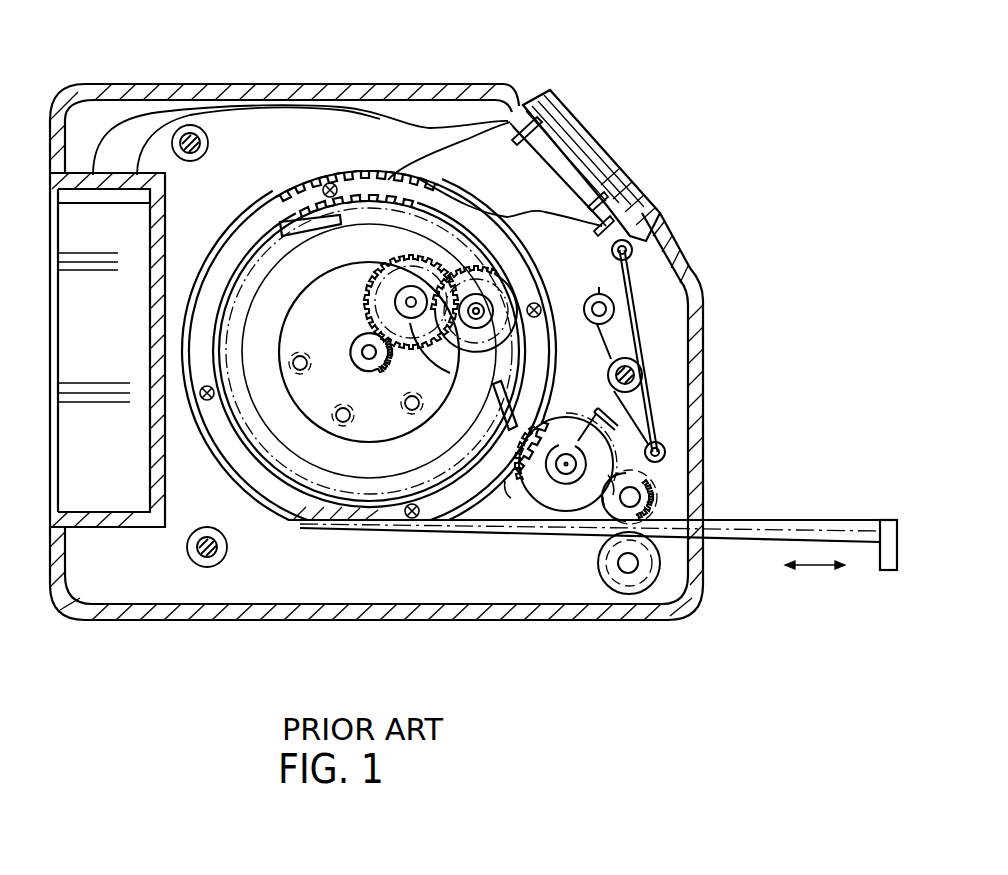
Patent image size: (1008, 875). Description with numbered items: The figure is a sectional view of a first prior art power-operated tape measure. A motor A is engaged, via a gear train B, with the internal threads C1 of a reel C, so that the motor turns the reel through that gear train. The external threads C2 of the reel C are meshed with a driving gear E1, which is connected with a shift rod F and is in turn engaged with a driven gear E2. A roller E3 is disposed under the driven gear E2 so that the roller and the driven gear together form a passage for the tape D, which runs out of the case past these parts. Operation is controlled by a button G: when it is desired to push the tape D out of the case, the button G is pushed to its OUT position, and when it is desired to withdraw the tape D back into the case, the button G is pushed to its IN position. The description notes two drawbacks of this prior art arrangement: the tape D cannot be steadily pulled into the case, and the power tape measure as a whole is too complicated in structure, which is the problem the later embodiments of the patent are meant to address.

The motor A is at (323, 290).
The gear train B is at (397, 246).
The reel C is at (458, 186).
The internal threads C1 is at (362, 210).
The external threads C2 is at (329, 181).
The tape D is at (802, 526).
The driving gear E1 is at (598, 450).
The driven gear E2 is at (645, 493).
The roller E3 is at (644, 588).
The shift rod F is at (644, 330).
The button G is at (603, 154).
The IN position IN is at (654, 205).
The OUT position OUT is at (536, 112).